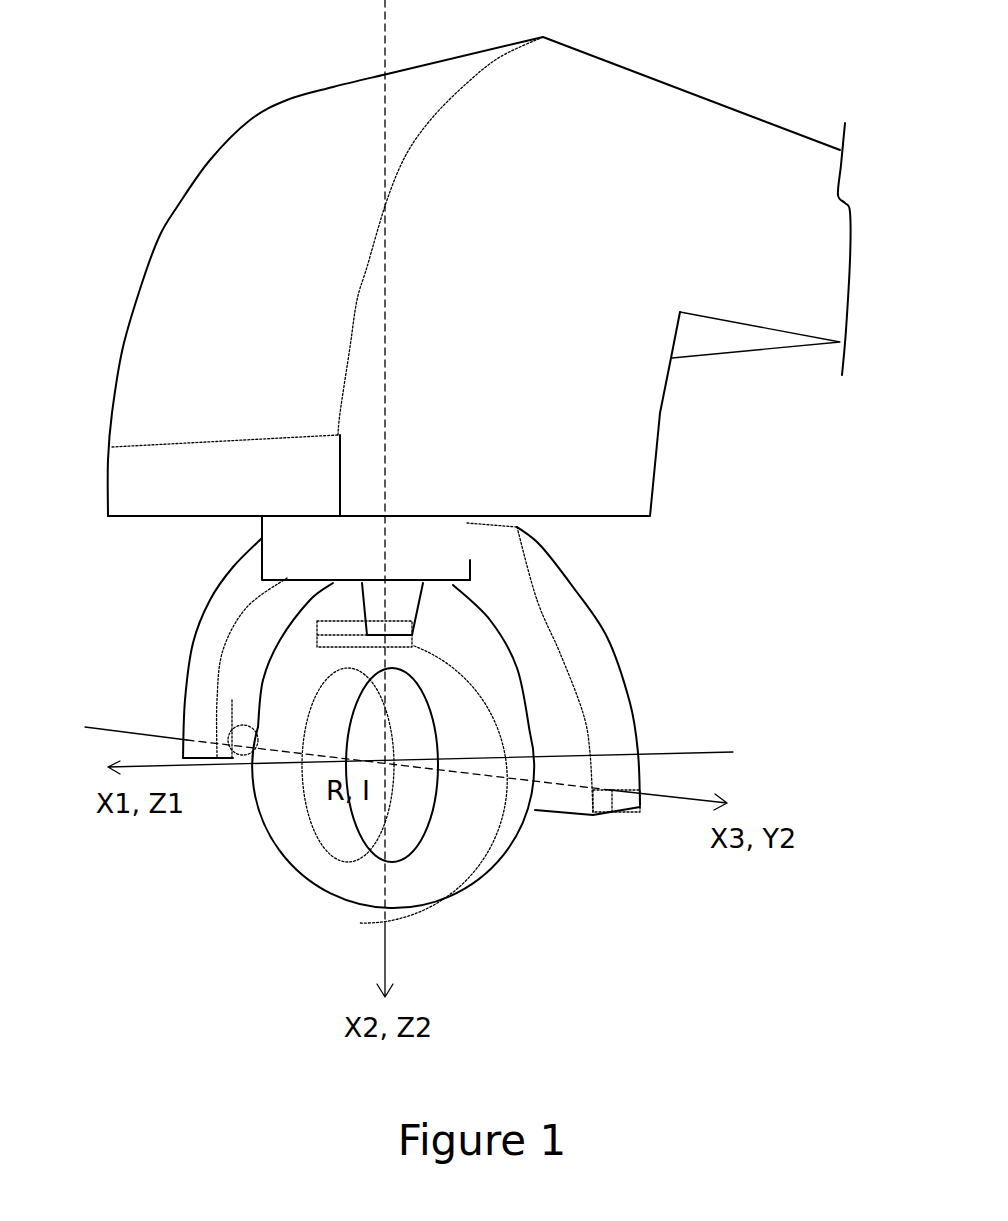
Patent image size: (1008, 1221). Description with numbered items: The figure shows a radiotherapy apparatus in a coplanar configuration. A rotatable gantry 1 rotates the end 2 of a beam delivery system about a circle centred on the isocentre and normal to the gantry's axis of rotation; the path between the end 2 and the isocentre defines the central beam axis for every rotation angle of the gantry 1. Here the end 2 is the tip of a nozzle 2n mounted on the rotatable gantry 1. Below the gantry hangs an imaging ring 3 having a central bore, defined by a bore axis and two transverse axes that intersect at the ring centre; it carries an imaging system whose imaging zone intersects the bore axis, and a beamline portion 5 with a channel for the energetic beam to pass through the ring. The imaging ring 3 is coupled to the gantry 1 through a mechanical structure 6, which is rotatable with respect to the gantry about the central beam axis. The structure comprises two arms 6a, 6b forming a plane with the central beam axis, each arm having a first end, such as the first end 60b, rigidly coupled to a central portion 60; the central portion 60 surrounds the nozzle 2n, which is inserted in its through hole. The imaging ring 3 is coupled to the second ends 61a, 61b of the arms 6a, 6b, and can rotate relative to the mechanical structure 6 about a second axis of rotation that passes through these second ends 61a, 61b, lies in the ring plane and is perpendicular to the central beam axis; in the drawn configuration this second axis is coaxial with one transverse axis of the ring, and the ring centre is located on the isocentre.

The rotatable gantry 1 is at (222, 258).
The end of the beam delivery system 2 is at (428, 594).
The nozzle 2n is at (380, 610).
The imaging ring 3 is at (327, 872).
The beamline portion 5 is at (363, 657).
The mechanical structure 6 is at (428, 728).
The arm 6a is at (200, 668).
The arm 6b is at (600, 702).
The central portion 60 is at (363, 552).
The first end of arm 60b is at (473, 558).
The second end of arm 61a is at (180, 750).
The second end of arm 61b is at (610, 800).